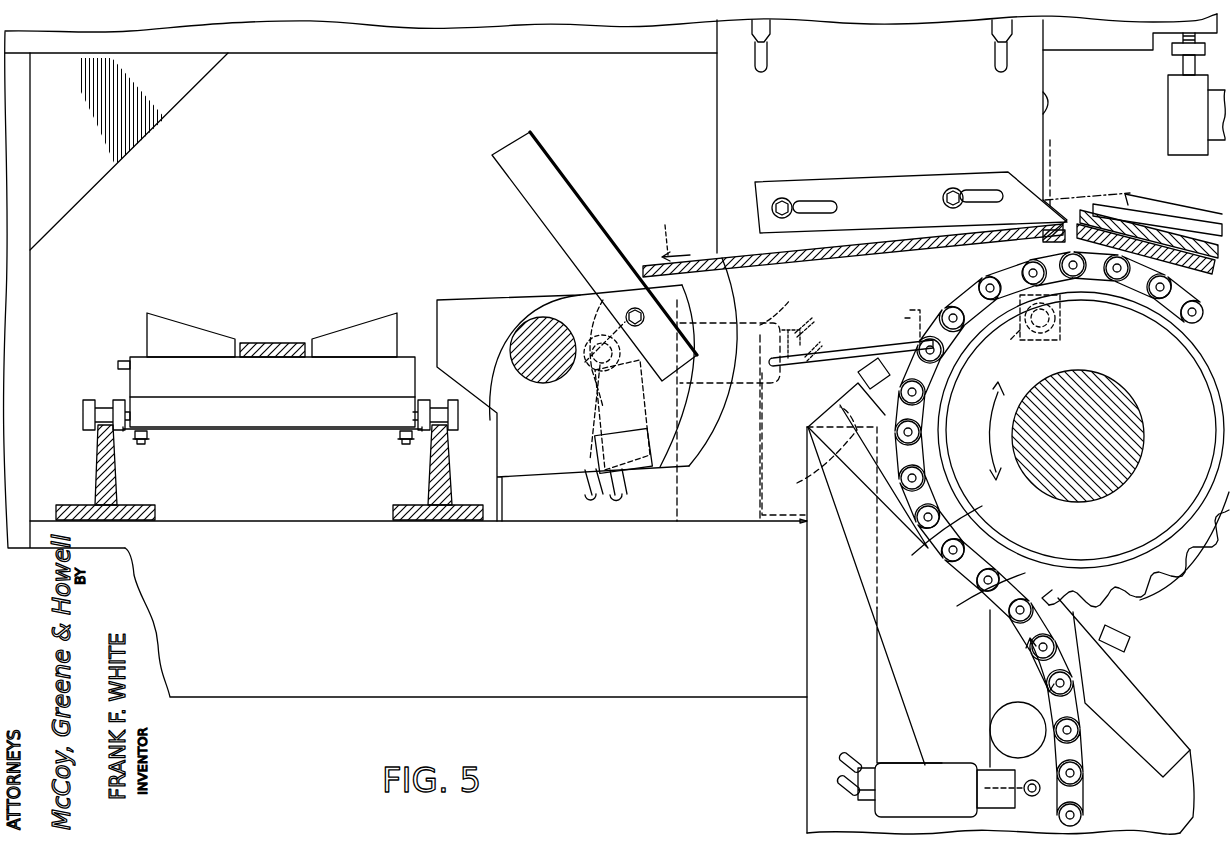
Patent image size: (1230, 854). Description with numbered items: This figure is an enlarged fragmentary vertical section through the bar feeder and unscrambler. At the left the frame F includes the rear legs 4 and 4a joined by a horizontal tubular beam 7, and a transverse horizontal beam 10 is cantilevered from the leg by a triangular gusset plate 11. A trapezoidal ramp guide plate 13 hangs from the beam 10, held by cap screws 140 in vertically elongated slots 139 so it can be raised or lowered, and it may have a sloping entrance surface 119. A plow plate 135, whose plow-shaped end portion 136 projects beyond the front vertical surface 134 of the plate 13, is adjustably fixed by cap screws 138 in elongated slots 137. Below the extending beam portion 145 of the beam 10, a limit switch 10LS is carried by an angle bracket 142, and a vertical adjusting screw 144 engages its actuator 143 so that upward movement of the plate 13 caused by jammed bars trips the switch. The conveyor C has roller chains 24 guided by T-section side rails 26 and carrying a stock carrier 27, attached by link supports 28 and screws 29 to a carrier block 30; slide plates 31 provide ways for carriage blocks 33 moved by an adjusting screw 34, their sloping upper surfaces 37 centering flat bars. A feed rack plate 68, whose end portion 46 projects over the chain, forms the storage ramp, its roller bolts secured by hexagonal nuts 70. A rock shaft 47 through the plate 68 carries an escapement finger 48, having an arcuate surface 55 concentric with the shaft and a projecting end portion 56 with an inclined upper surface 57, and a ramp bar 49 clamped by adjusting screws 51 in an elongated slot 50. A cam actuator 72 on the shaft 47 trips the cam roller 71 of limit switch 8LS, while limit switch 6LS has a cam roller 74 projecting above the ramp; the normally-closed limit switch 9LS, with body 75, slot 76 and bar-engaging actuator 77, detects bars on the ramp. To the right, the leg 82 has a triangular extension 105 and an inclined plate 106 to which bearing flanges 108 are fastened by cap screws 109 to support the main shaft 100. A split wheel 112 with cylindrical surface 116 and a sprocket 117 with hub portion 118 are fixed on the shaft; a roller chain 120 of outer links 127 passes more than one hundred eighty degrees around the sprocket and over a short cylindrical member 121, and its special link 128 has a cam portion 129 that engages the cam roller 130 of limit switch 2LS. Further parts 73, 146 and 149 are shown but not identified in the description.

The rear leg 4 is at (32, 274).
The rear leg 4a is at (807, 750).
The horizontal tubular beam 7 is at (238, 707).
The transverse horizontal beam 10 is at (352, 53).
The triangular gusset plate 11 is at (110, 180).
The ramp guide plate 13 is at (717, 110).
The endless roller chain 24 is at (92, 400).
The side rail 26 is at (138, 505).
The stock carrier 27 is at (263, 292).
The link support 28 is at (150, 437).
The screw 29 is at (145, 444).
The carrier block 30 is at (242, 418).
The slide plate 31 is at (280, 385).
The carriage block 33 is at (360, 313).
The adjusting screw 34 is at (122, 361).
The sloping upper surface 37 is at (170, 313).
The end portion 46 is at (455, 300).
The rock shaft 47 is at (540, 372).
The escapement finger 48 is at (712, 468).
The ramp bar 49 is at (570, 183).
The elongated slot 50 is at (665, 232).
The adjusting screw 51 is at (638, 308).
The arcuate outer surface 55 is at (712, 450).
The projecting end portion 56 is at (730, 262).
The inclined upper surface 57 is at (702, 265).
The feed rack plate 68 is at (530, 293).
The hexagonal nut 70 is at (791, 324).
The cam roller 71 is at (602, 371).
The cam actuator 72 is at (603, 300).
The link 73 is at (592, 412).
The cam roller 74 is at (722, 293).
The switch body 75 is at (915, 308).
The slot 76 is at (843, 356).
The bar-engaging actuator 77 is at (985, 250).
The leg 82 is at (1170, 808).
The horizontal shaft 100 is at (1140, 428).
The triangular extension 105 is at (900, 645).
The inclined flat rectangular plate 106 is at (1160, 735).
The flange 108 is at (807, 427).
The cap screw 109 is at (857, 378).
The split circular wheel 112 is at (1208, 590).
The external cylindrical surface 116 is at (1160, 605).
The sprocket 117 is at (975, 600).
The cylindrical hub portion 118 is at (945, 548).
The sloping surface 119 is at (1070, 168).
The roller chain 120 is at (987, 616).
The short cylindrical member 121 is at (1000, 718).
The outer link 127 is at (1200, 335).
The special outer link 128 is at (1085, 790).
The cam portion 129 is at (1040, 805).
The cam roller 130 is at (1005, 775).
The front vertical surface 134 is at (1043, 100).
The plow plate 135 is at (878, 182).
The plow-shaped end portion 136 is at (1062, 210).
The elongated slot 137 is at (815, 201).
The cap screw 138 is at (782, 198).
The vertically elongated slot 139 is at (768, 68).
The cap screw 140 is at (775, 32).
The angle bracket 142 is at (1220, 140).
The vertical actuator 143 is at (1185, 52).
The vertical adjusting screw 144 is at (1172, 50).
The extending beam portion 145 is at (1096, 53).
The stem 146 is at (1188, 68).
The block 149 is at (1122, 648).
The limit switch 2LS is at (940, 812).
The limit switch 6LS is at (625, 465).
The limit switch 8LS is at (750, 398).
The limit switch 9LS is at (1035, 357).
The limit switch 10LS is at (1180, 105).